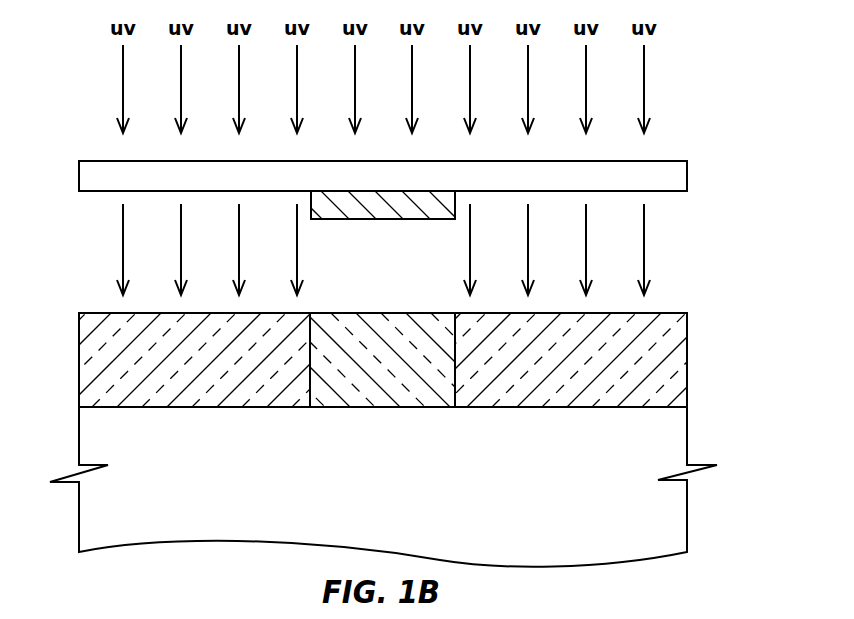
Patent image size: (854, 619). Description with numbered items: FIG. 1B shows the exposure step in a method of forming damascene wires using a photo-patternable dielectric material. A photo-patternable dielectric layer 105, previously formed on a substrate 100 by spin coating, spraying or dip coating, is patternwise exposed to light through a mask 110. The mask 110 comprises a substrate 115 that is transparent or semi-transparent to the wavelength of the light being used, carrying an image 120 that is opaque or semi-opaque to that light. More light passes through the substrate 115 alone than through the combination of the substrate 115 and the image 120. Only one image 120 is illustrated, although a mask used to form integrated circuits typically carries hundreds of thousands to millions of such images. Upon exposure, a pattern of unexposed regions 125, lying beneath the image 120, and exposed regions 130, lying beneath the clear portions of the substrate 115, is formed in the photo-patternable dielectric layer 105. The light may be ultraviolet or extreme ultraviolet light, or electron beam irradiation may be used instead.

The substrate 100 is at (549, 547).
The photo-patternable dielectric layer 105 is at (401, 400).
The mask 110 is at (412, 195).
The substrate 115 is at (98, 177).
The image 120 is at (354, 205).
The unexposed regions 125 is at (383, 386).
The exposed regions 130 is at (223, 393).